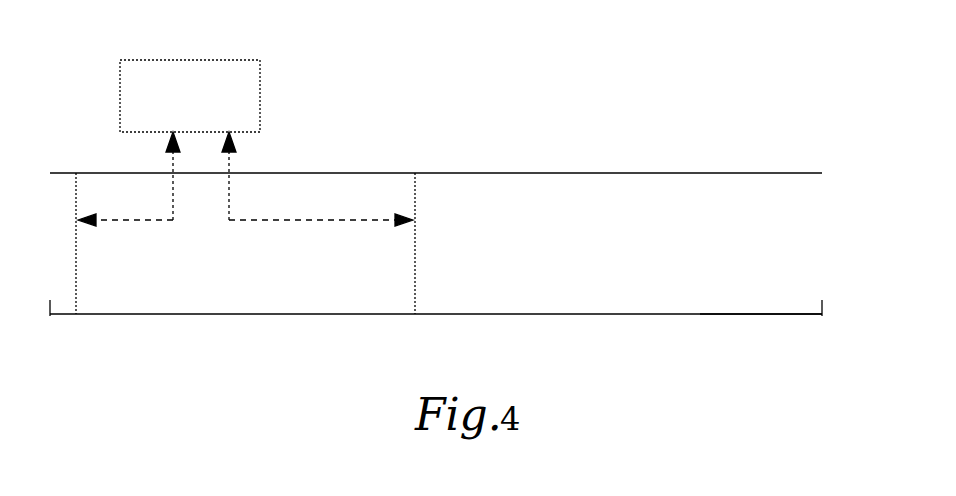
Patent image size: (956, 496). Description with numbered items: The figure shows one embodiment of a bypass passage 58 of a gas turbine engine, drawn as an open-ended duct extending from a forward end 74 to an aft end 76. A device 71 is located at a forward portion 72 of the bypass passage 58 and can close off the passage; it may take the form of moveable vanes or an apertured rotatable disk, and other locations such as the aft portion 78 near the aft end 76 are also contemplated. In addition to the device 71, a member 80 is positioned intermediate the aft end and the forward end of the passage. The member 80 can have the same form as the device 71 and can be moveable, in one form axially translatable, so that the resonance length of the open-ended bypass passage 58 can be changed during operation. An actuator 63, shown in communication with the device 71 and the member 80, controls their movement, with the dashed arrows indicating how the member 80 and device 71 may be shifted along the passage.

The bypass passage 58 is at (300, 172).
The actuator 63 is at (261, 92).
The device 71 is at (83, 278).
The forward portion 72 is at (88, 333).
The forward end 74 is at (50, 316).
The aft end 76 is at (822, 318).
The aft portion 78 is at (806, 347).
The member 80 is at (416, 265).